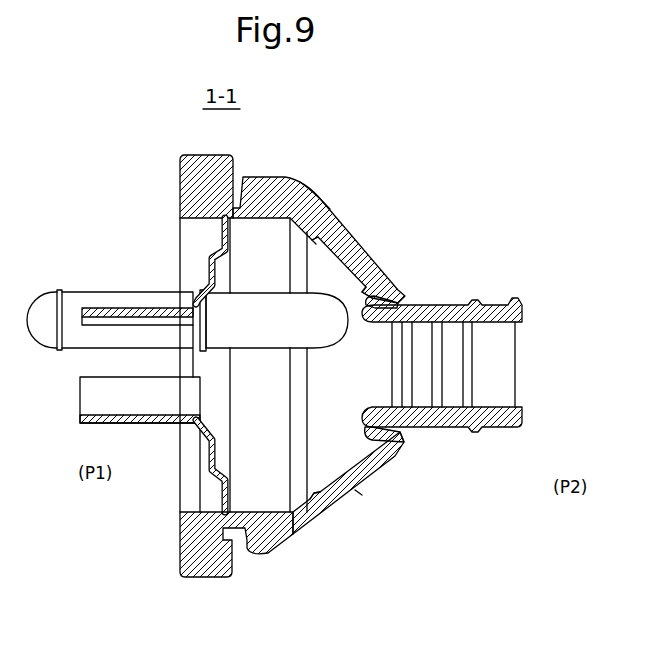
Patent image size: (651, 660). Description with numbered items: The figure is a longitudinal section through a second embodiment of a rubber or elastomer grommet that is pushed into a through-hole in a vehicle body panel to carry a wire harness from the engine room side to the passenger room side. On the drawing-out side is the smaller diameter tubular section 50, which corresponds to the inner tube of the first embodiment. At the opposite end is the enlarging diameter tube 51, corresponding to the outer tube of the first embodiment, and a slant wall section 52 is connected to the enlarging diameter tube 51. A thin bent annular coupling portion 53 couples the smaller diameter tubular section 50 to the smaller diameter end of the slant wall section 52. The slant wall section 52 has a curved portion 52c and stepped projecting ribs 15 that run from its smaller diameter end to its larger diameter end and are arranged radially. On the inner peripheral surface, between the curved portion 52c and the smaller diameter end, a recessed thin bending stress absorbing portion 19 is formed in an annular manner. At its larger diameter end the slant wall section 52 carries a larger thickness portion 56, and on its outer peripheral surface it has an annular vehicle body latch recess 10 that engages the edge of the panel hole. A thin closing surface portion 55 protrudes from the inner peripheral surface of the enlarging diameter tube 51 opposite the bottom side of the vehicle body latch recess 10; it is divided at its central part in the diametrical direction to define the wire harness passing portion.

The vehicle body latch recess 10 is at (235, 545).
The stepped projecting rib 15 is at (394, 456).
The bending stress absorbing portion 19 is at (363, 244).
The smaller diameter tubular section 50 is at (455, 305).
The enlarging diameter tube 51 is at (333, 533).
The slant wall section 52 is at (350, 213).
The curved portion 52c is at (328, 195).
The bent annular coupling portion 53 is at (410, 300).
The closing surface portion 55 is at (196, 440).
The larger thickness portion 56 is at (200, 152).